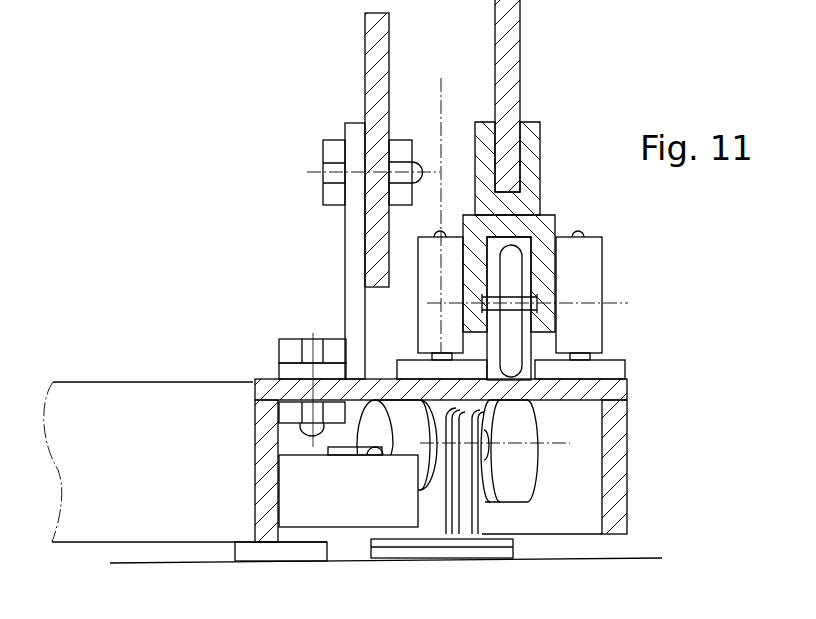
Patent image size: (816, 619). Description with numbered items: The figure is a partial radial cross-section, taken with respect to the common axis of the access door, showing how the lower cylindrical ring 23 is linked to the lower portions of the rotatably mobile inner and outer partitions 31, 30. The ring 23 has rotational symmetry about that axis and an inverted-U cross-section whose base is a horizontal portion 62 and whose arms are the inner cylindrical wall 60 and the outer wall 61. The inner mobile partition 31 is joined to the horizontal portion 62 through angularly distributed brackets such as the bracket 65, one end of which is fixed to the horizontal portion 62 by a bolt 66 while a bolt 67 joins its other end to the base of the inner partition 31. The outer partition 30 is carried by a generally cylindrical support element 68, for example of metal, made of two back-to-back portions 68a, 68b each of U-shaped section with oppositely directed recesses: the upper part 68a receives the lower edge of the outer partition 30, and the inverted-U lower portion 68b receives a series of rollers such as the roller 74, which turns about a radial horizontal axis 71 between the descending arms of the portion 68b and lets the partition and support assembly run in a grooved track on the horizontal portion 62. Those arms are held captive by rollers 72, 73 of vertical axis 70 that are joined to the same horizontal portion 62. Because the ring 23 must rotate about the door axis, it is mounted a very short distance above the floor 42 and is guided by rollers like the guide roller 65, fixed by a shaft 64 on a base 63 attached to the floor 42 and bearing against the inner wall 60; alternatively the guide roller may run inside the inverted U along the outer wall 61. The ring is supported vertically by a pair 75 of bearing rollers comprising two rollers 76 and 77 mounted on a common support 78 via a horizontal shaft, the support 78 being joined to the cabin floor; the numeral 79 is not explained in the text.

The lower circular or cylindrical ring 23 is at (171, 467).
The outer mobile partition 30 is at (514, 48).
The inner mobile partition 31 is at (365, 36).
The floor 42 is at (648, 558).
The inner cylindrical wall 60 is at (262, 440).
The outer wall 61 is at (628, 506).
The horizontal portion 62 is at (606, 392).
The base 63 is at (497, 553).
The shaft 64 is at (368, 535).
The bracket / guide roller 65 is at (355, 265).
The bolt 66 is at (292, 344).
The bolt 67 is at (326, 140).
The support element 68 is at (550, 203).
The upper part 68a is at (541, 139).
The lower portion 68b is at (556, 220).
The vertical axis 70 is at (441, 80).
The radial horizontal axis 71 is at (497, 268).
The roller 72 is at (598, 343).
The roller 73 is at (412, 292).
The roller 74 is at (507, 350).
The pair of bearing rollers 75 is at (518, 508).
The bearing roller 76 is at (602, 453).
The bearing roller 77 is at (372, 416).
The common support 78 is at (470, 546).
The roller 79 is at (535, 432).